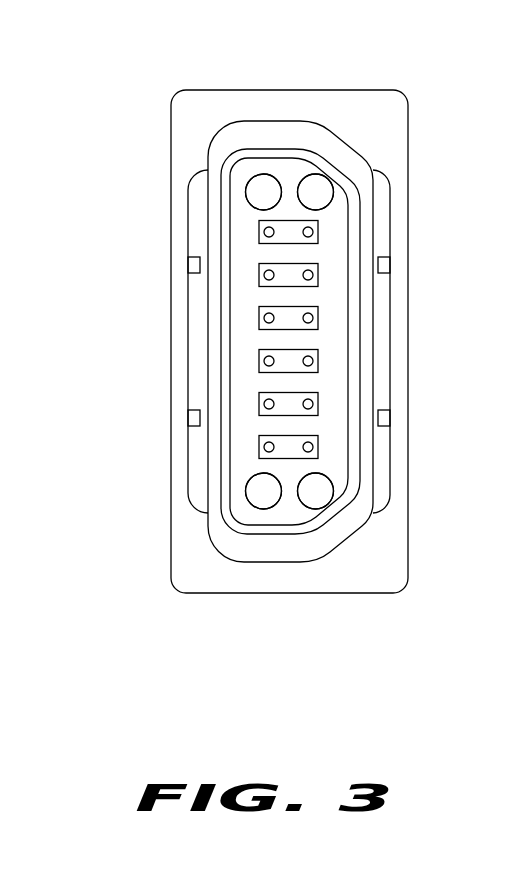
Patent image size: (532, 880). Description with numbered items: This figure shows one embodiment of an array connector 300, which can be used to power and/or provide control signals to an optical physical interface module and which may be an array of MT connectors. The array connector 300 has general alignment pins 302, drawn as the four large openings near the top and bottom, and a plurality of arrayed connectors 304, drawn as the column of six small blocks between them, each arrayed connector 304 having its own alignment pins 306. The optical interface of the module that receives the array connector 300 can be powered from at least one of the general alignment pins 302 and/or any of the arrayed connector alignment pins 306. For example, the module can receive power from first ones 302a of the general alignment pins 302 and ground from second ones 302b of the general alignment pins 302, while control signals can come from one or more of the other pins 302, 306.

The array connector 300 is at (174, 92).
The general alignment pins 302 is at (348, 196).
The first ones of the general alignment pins 302a is at (268, 174).
The second ones of the general alignment pins 302b is at (321, 174).
The arrayed connectors 304 is at (330, 246).
The arrayed connector alignment pins 306 is at (259, 232).